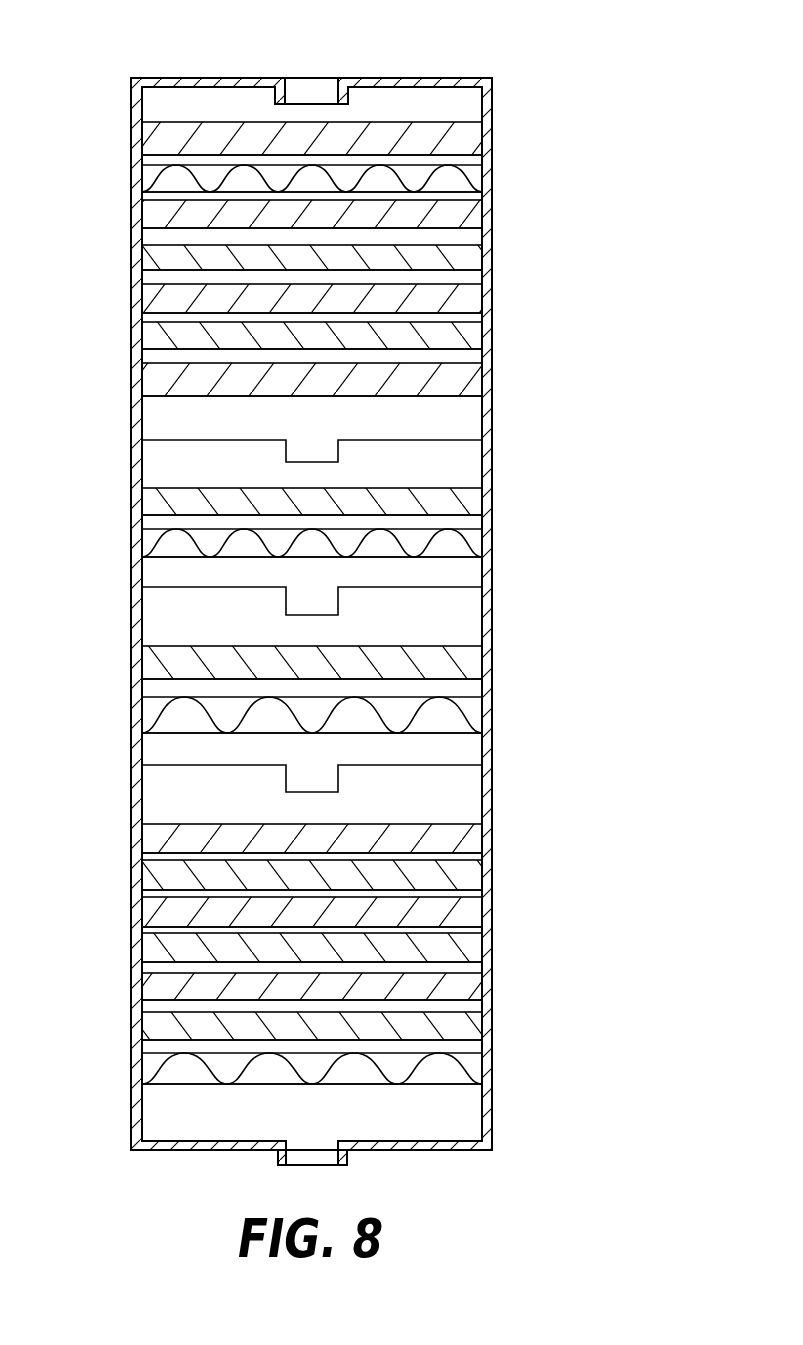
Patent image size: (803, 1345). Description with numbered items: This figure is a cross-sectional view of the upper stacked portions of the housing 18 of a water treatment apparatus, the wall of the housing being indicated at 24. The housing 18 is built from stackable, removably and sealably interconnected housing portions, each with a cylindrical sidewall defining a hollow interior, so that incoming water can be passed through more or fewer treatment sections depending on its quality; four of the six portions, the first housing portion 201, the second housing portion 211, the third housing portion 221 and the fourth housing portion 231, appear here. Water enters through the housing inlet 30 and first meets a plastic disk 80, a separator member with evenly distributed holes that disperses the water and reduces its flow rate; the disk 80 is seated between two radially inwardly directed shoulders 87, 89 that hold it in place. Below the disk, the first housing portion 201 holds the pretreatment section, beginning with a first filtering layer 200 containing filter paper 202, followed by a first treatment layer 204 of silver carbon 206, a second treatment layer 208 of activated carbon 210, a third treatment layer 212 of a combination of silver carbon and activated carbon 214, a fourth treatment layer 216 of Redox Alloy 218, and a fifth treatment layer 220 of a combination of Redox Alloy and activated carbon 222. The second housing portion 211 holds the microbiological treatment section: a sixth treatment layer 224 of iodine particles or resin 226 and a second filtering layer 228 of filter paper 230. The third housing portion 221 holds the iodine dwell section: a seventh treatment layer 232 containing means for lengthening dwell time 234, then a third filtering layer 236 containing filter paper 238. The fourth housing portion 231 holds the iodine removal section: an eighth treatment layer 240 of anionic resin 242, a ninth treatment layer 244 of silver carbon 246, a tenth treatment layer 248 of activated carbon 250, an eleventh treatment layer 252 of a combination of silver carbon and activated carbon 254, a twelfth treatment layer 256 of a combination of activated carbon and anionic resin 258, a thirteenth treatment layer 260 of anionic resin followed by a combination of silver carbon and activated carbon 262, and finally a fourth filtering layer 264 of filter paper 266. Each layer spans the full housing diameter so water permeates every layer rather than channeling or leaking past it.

The housing 18 is at (667, 142).
The housing 24 is at (403, 74).
The housing inlet 30 is at (291, 98).
The radially inwardly directed shoulder 87 is at (150, 117).
The plastic disk 80 is at (159, 137).
The radially inwardly directed shoulder 89 is at (150, 158).
The first filtering layer 200 is at (484, 172).
The first housing portion 201 is at (496, 105).
The filter paper 202 is at (487, 186).
The first treatment layer 204 is at (141, 210).
The silver carbon 206 is at (141, 224).
The second treatment layer 208 is at (484, 249).
The activated carbon 210 is at (487, 265).
The second housing portion 211 is at (493, 419).
The third treatment layer 212 is at (141, 296).
The combination of silver carbon and activated carbon 214 is at (141, 309).
The fourth treatment layer 216 is at (484, 327).
The Redox Alloy 218 is at (487, 343).
The fifth treatment layer 220 is at (141, 373).
The third housing portion 221 is at (493, 622).
The combination of Redox Alloy and activated carbon 222 is at (141, 386).
The sixth treatment layer 224 is at (484, 500).
The iodine particles or resin 226 is at (487, 515).
The second filtering layer 228 is at (141, 538).
The filter paper 230 is at (141, 551).
The fourth housing portion 231 is at (493, 791).
The seventh treatment layer 232 is at (484, 659).
The means for lengthening dwell time 234 is at (487, 673).
The third filtering layer 236 is at (141, 711).
The spacer support sheet 238 is at (141, 724).
The eighth treatment layer 240 is at (484, 834).
The anionic resin 242 is at (487, 848).
The ninth treatment layer 244 is at (141, 868).
The silver carbon 246 is at (141, 881).
The tenth treatment layer 248 is at (484, 907).
The activated carbon 250 is at (487, 921).
The eleventh treatment layer 252 is at (141, 943).
The combination of silver carbon and activated carbon 254 is at (141, 956).
The twelfth treatment layer 256 is at (484, 987).
The combination of activated carbon and anionic resin 258 is at (487, 1001).
The thirteenth treatment layer 260 is at (141, 1020).
The anionic resin followed by a combination of silver carbon and activated carbon 262 is at (141, 1033).
The fourth filtering layer 264 is at (484, 1065).
The filter paper 266 is at (487, 1080).